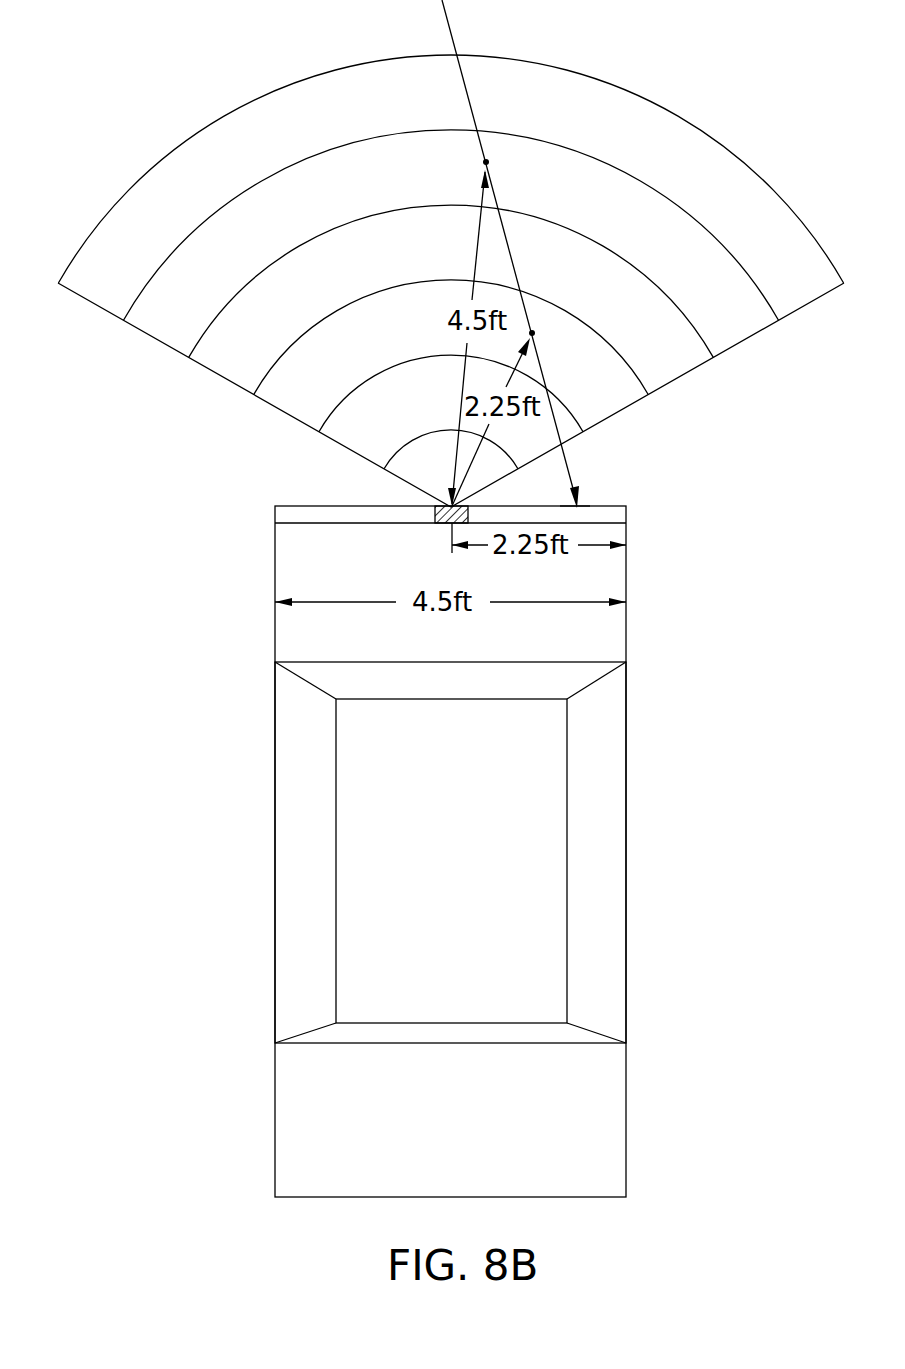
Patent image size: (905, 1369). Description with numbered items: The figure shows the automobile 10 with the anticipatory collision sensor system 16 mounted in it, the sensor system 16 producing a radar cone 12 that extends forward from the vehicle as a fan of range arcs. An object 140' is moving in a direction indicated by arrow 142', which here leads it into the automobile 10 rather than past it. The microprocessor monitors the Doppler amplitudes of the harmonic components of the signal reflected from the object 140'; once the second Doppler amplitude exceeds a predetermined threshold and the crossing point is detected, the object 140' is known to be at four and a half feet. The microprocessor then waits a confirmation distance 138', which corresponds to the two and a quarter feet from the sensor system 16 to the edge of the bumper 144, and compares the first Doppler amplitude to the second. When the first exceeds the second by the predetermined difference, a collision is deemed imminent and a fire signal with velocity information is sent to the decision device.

The automobile 10 is at (628, 832).
The radar cone 12 is at (745, 343).
The anticipatory collision sensor system 16 is at (445, 526).
The confirmation distance 138' is at (549, 490).
The object 140' is at (451, 163).
The arrow 142' is at (560, 254).
The edge of the bumper 144 is at (626, 508).